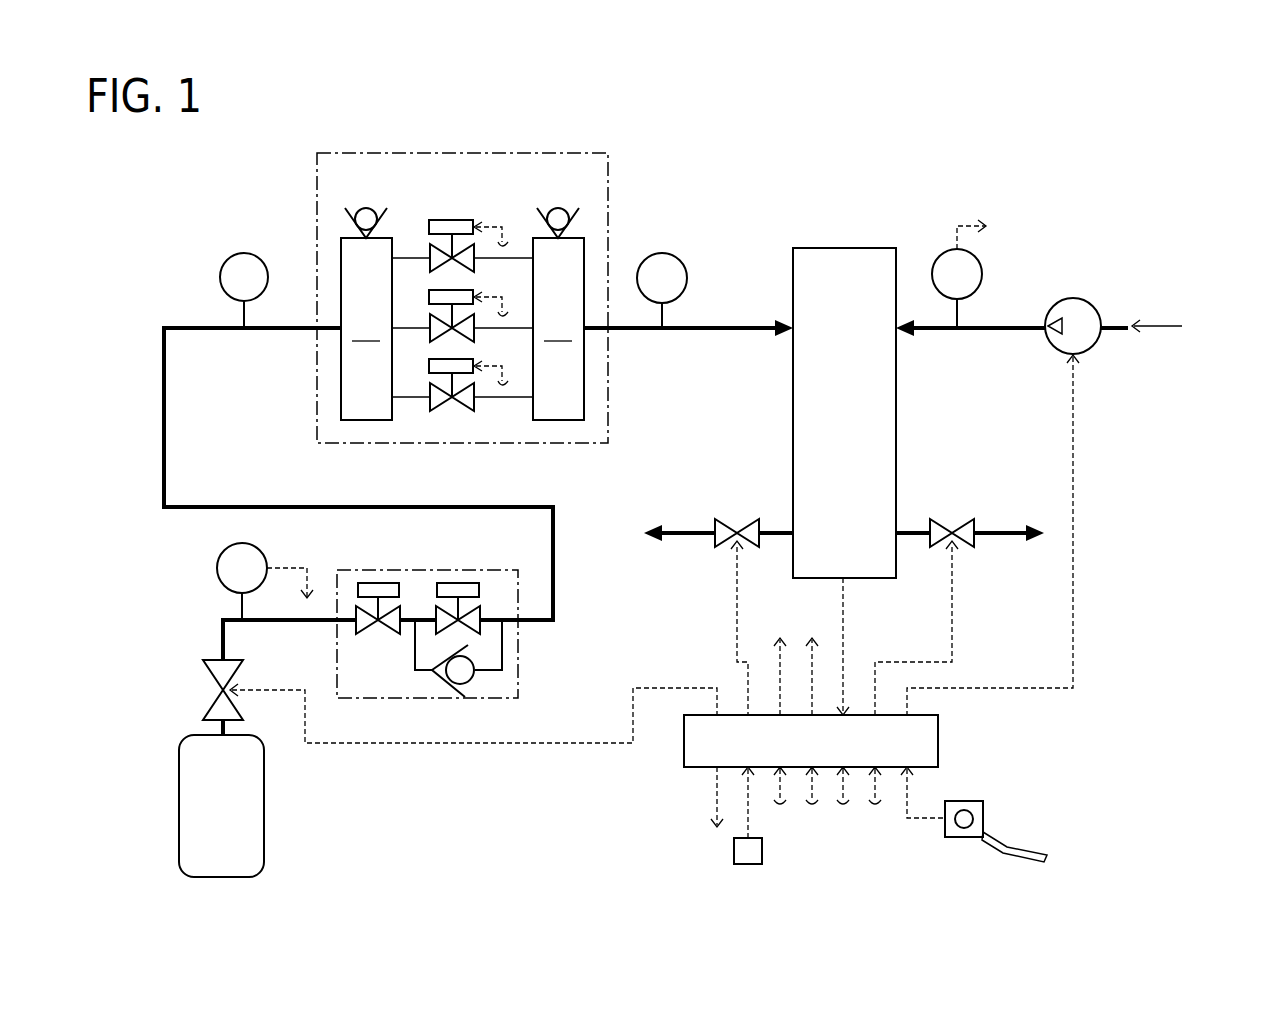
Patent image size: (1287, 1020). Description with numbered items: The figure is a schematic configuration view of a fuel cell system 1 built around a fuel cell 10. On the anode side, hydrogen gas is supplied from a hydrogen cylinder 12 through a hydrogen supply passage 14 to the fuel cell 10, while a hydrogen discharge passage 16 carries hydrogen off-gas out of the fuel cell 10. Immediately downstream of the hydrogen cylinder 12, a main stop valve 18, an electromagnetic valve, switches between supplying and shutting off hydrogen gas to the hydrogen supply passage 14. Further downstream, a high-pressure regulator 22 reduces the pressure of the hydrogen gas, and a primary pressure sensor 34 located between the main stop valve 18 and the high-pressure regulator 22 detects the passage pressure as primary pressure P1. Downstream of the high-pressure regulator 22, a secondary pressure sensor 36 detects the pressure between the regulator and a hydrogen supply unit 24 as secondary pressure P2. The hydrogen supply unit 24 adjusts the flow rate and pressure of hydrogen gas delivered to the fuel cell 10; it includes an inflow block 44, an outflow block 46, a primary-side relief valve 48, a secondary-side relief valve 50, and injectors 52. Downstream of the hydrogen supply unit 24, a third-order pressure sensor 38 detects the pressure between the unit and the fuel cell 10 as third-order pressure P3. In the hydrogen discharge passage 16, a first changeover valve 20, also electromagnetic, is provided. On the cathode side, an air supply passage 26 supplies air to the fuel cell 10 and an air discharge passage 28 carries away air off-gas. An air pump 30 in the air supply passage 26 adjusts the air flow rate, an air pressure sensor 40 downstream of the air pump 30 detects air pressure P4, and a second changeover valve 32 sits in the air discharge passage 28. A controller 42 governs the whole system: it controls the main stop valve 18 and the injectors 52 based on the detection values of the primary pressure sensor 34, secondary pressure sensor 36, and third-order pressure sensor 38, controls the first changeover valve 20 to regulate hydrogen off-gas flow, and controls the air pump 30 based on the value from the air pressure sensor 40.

The fuel cell system 1 is at (1060, 200).
The fuel cell 10 is at (838, 248).
The hydrogen cylinder 12 is at (264, 830).
The hydrogen supply passage 14 is at (735, 328).
The hydrogen discharge passage 16 is at (682, 533).
The main stop valve 18 is at (210, 682).
The first changeover valve 20 is at (742, 519).
The high-pressure regulator 22 is at (518, 660).
The hydrogen supply unit 24 is at (317, 180).
The air supply passage 26 is at (1010, 328).
The air discharge passage 28 is at (1000, 533).
The air pump 30 is at (1073, 298).
The second changeover valve 32 is at (955, 519).
The primary pressure sensor 34 is at (217, 573).
The secondary pressure sensor 36 is at (240, 253).
The third-order pressure sensor 38 is at (660, 253).
The air pressure sensor 40 is at (935, 262).
The controller 42 is at (938, 742).
The inflow block 44 is at (366, 329).
The outflow block 46 is at (558, 329).
The primary-side relief valve 48 is at (366, 208).
The secondary-side relief valve 50 is at (558, 208).
The injectors 52 is at (452, 220).